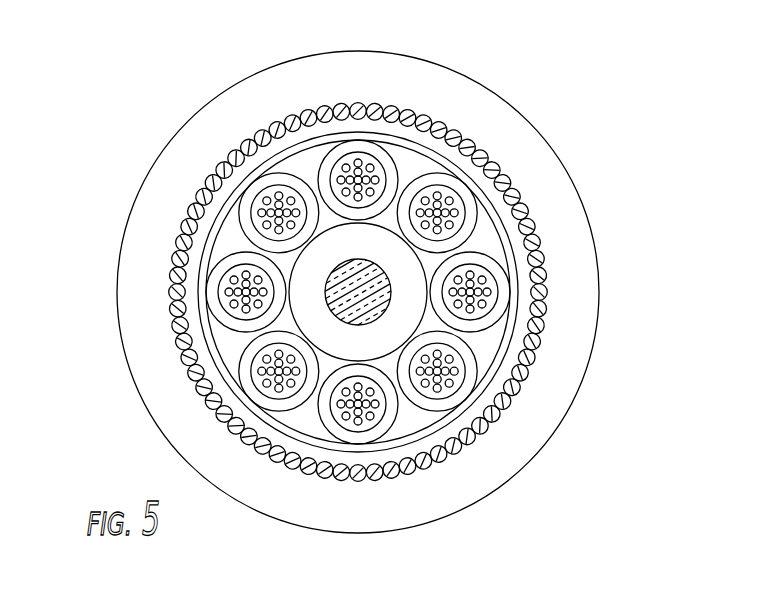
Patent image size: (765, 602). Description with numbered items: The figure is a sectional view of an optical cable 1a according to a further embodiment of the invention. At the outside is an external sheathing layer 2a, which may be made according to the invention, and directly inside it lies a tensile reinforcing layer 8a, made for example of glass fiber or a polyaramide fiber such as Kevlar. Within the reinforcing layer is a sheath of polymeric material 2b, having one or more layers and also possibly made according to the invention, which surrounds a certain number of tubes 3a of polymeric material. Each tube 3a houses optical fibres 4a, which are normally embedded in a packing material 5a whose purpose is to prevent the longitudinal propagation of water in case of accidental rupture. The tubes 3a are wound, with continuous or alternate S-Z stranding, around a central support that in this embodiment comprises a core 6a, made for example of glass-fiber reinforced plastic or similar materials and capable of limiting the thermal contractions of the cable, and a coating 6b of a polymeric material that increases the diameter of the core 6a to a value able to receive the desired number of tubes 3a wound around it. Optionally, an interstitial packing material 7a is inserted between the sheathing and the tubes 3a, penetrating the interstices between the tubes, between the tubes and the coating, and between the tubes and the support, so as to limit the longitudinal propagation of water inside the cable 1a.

The optical cable 1a is at (150, 151).
The external sheathing layer 2a is at (525, 145).
The sheath of polymeric material 2b is at (440, 430).
The tube 3a is at (365, 145).
The optical fibre 4a is at (473, 308).
The packing material 5a is at (492, 298).
The core 6a is at (375, 302).
The coating 6b is at (393, 325).
The interstitial packing material 7a is at (407, 418).
The tensile reinforcing layer 8a is at (533, 223).